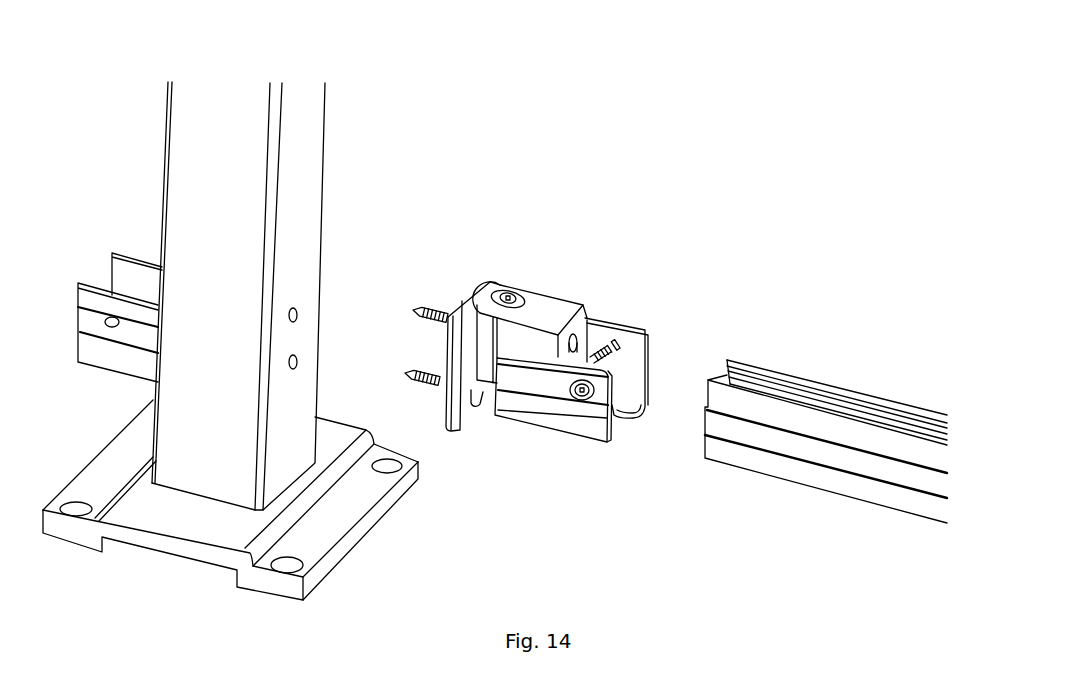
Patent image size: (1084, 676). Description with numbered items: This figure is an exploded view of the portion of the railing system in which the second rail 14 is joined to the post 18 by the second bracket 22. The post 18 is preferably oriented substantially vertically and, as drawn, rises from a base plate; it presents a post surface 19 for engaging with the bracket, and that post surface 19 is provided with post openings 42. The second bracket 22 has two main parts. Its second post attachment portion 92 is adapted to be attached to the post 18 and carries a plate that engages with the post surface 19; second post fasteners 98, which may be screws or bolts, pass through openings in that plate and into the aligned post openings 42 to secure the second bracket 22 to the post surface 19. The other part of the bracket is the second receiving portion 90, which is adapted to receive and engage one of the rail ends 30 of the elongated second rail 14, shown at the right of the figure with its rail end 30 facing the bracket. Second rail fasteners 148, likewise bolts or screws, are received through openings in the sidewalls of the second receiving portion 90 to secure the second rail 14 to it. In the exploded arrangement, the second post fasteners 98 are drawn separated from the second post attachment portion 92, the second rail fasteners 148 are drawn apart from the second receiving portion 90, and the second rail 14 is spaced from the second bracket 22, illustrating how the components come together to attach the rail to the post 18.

The second rail 14 is at (826, 396).
The post 18 is at (252, 296).
The post surface 19 is at (297, 233).
The second bracket 22 is at (506, 364).
The rail end 30 is at (733, 350).
The post openings 42 is at (302, 315).
The second receiving portion 90 is at (533, 433).
The second post attachment portion 92 is at (479, 415).
The second post fasteners 98 is at (432, 299).
The second rail fasteners 148 is at (597, 343).